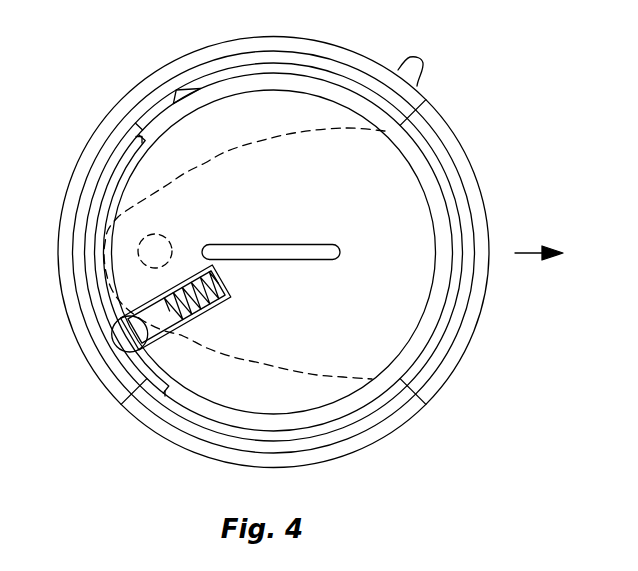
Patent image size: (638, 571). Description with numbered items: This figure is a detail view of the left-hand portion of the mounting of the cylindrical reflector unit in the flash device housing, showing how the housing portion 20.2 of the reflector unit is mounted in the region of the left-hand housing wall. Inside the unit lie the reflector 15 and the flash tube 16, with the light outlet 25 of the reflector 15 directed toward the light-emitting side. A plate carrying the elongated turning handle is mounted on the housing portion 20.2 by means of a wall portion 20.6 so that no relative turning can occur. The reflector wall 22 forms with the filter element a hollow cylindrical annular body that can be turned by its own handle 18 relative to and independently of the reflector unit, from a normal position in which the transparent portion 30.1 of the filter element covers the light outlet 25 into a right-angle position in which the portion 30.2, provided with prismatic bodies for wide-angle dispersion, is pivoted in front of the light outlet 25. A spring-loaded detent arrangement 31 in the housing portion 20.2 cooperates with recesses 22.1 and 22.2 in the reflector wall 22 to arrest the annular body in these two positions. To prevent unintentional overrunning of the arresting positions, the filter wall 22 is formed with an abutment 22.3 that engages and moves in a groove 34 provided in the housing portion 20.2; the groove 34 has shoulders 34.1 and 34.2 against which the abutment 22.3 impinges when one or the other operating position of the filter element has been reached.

The reflector 15 is at (357, 133).
The flash tube 16 is at (153, 252).
The handle 18 is at (423, 63).
The housing portion 20.2 is at (315, 108).
The wall portion 20.6 is at (325, 257).
The reflector wall 22 is at (240, 64).
The recess 22.1 is at (112, 338).
The recess 22.2 is at (180, 88).
The abutment 22.3 is at (135, 147).
The light outlet 25 is at (539, 245).
The transparent portion 30.1 is at (462, 342).
The cylindrical portion with prismatic bodies 30.2 is at (382, 430).
The spring-loaded detent arrangement 31 is at (147, 332).
The groove 34 is at (110, 190).
The shoulder 34.1 is at (142, 136).
The shoulder 34.2 is at (165, 393).